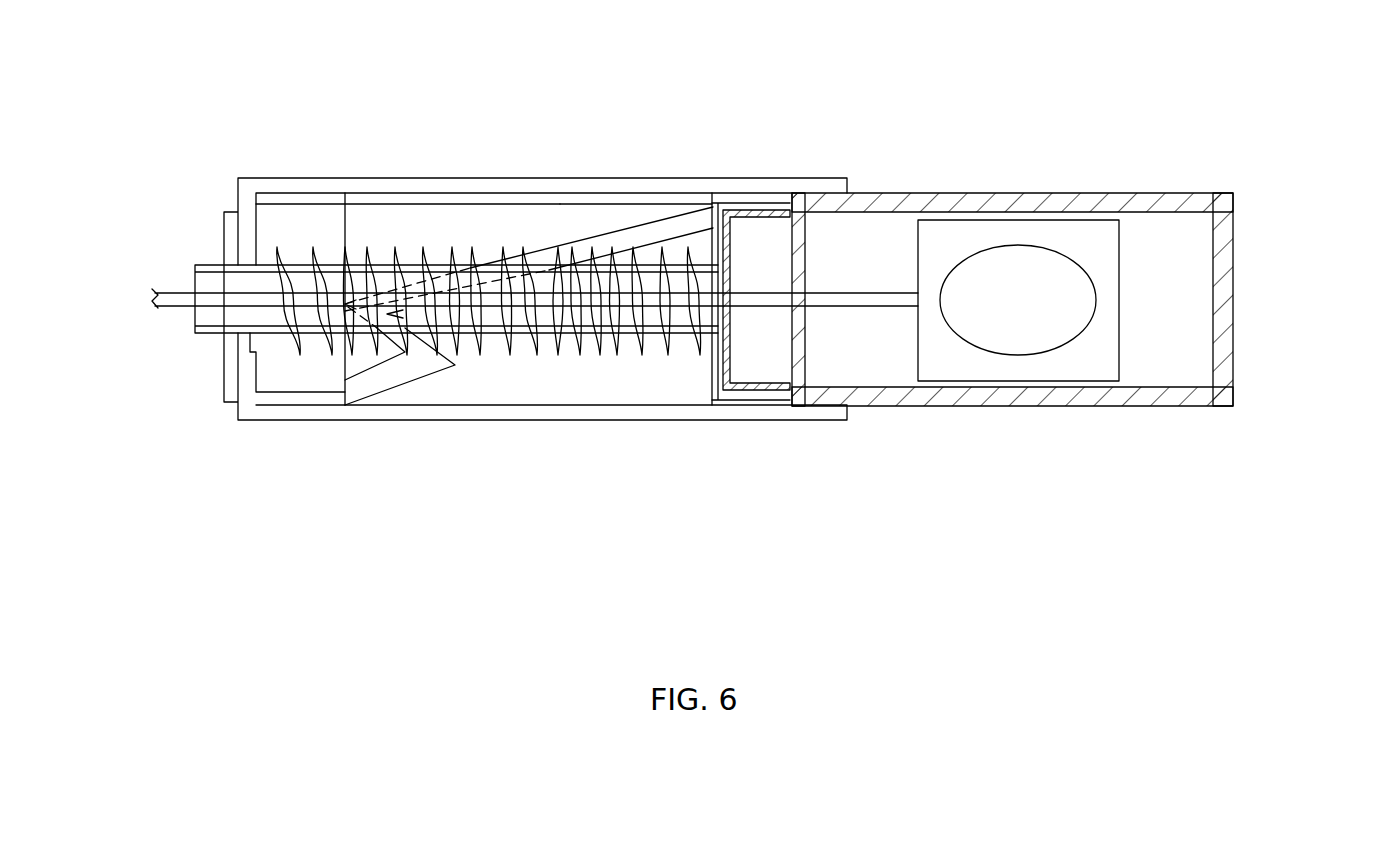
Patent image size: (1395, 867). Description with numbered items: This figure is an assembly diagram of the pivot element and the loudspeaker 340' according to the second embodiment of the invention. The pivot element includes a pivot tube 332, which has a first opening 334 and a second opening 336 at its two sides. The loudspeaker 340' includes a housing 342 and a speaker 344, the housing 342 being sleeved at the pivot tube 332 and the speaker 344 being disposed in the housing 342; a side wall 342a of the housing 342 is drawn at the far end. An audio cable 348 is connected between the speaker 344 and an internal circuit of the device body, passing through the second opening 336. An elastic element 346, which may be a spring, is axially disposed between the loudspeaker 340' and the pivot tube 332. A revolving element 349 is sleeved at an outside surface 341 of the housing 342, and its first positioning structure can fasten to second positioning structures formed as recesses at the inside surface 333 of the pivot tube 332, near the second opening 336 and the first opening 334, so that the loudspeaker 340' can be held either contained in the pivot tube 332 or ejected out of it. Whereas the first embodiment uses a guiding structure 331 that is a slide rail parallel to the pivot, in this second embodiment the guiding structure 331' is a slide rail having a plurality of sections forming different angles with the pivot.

The guiding structure 331 is at (535, 260).
The pivot tube 332 is at (490, 187).
The inside surface 333 is at (628, 195).
The guiding structure 331' is at (529, 351).
The second opening 336 is at (248, 265).
The audio cable 348 is at (154, 302).
The elastic element 346 is at (555, 363).
The revolving element 349 is at (772, 207).
The outside surface 341 is at (772, 394).
The first opening 334 is at (827, 197).
The housing 342 is at (1157, 193).
The loudspeaker 340' is at (1012, 221).
The cylinder end wall 342a is at (1237, 300).
The speaker 344 is at (1023, 337).